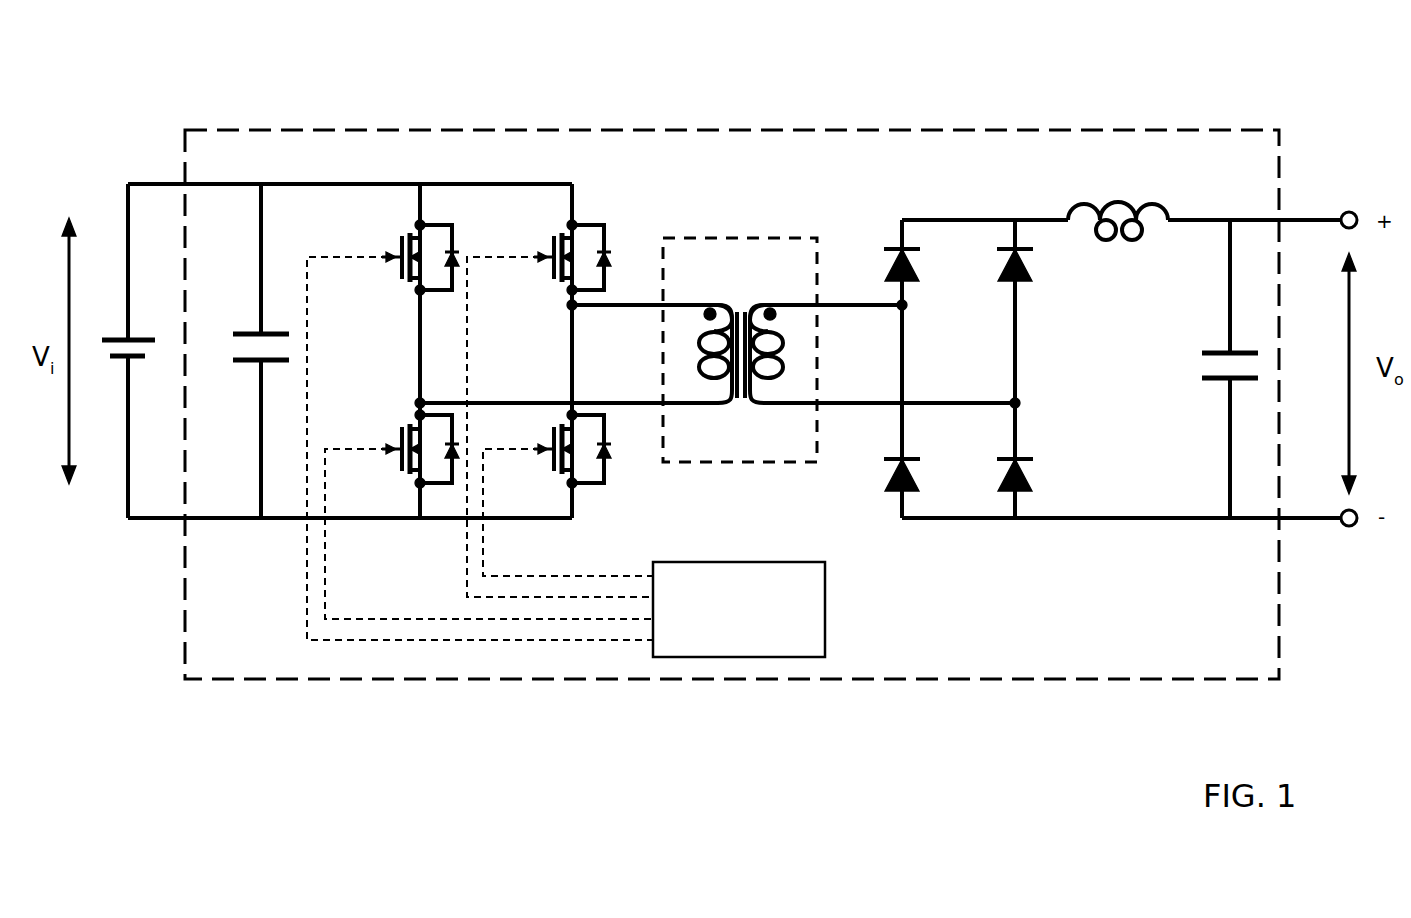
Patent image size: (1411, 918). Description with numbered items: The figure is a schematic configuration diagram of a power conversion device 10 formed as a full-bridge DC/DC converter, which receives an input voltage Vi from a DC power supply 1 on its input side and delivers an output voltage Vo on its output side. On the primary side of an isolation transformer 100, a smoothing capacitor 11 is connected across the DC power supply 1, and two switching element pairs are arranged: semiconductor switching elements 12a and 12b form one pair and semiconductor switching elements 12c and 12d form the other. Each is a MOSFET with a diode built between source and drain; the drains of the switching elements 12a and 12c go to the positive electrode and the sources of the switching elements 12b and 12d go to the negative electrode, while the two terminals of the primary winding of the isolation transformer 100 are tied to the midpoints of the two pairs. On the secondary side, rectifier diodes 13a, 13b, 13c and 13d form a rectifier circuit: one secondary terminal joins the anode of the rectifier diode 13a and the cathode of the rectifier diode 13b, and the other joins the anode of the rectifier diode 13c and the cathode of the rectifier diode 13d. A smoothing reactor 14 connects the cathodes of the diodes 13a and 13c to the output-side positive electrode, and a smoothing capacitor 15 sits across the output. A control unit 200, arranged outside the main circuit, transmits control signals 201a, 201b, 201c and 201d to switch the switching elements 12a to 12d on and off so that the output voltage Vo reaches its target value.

The power conversion device 10 is at (240, 128).
The DC power supply 1 is at (122, 330).
The smoothing capacitor 11 is at (248, 334).
The semiconductor switching element 12a is at (412, 291).
The semiconductor switching element 12b is at (410, 485).
The semiconductor switching element 12c is at (564, 291).
The semiconductor switching element 12d is at (564, 485).
The isolation transformer 100 is at (688, 226).
The rectifier diode 13a is at (878, 276).
The rectifier diode 13b is at (886, 488).
The rectifier diode 13c is at (1000, 278).
The rectifier diode 13d is at (998, 488).
The smoothing reactor 14 is at (1122, 203).
The smoothing capacitor 15 is at (1220, 352).
The control unit 200 is at (826, 604).
The control signal 201a is at (306, 608).
The control signal 201b is at (350, 619).
The control signal 201c is at (466, 540).
The control signal 201d is at (504, 576).